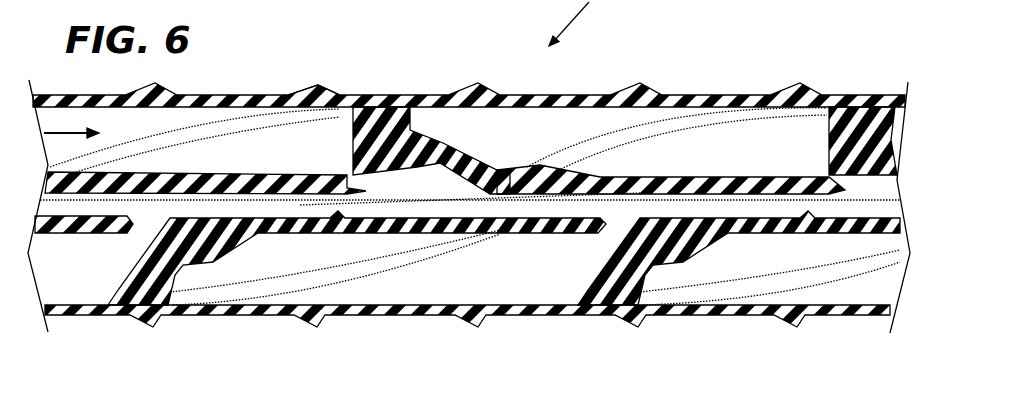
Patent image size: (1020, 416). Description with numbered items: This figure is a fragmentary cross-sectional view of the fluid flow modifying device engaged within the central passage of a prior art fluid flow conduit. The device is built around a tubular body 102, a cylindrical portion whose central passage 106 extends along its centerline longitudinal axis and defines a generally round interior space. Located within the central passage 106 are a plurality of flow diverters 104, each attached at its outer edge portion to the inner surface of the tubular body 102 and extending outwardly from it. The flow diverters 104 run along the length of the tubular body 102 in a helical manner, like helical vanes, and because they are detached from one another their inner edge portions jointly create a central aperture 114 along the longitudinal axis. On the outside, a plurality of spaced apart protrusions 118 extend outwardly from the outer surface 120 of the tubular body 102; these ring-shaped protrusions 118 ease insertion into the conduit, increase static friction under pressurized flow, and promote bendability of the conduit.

The tubular body 102 is at (251, 104).
The flow diverters 104 is at (670, 128).
The central passage 106 is at (51, 138).
The central aperture 114 is at (752, 205).
The protrusions 118 is at (318, 88).
The outer surface 120 is at (410, 97).